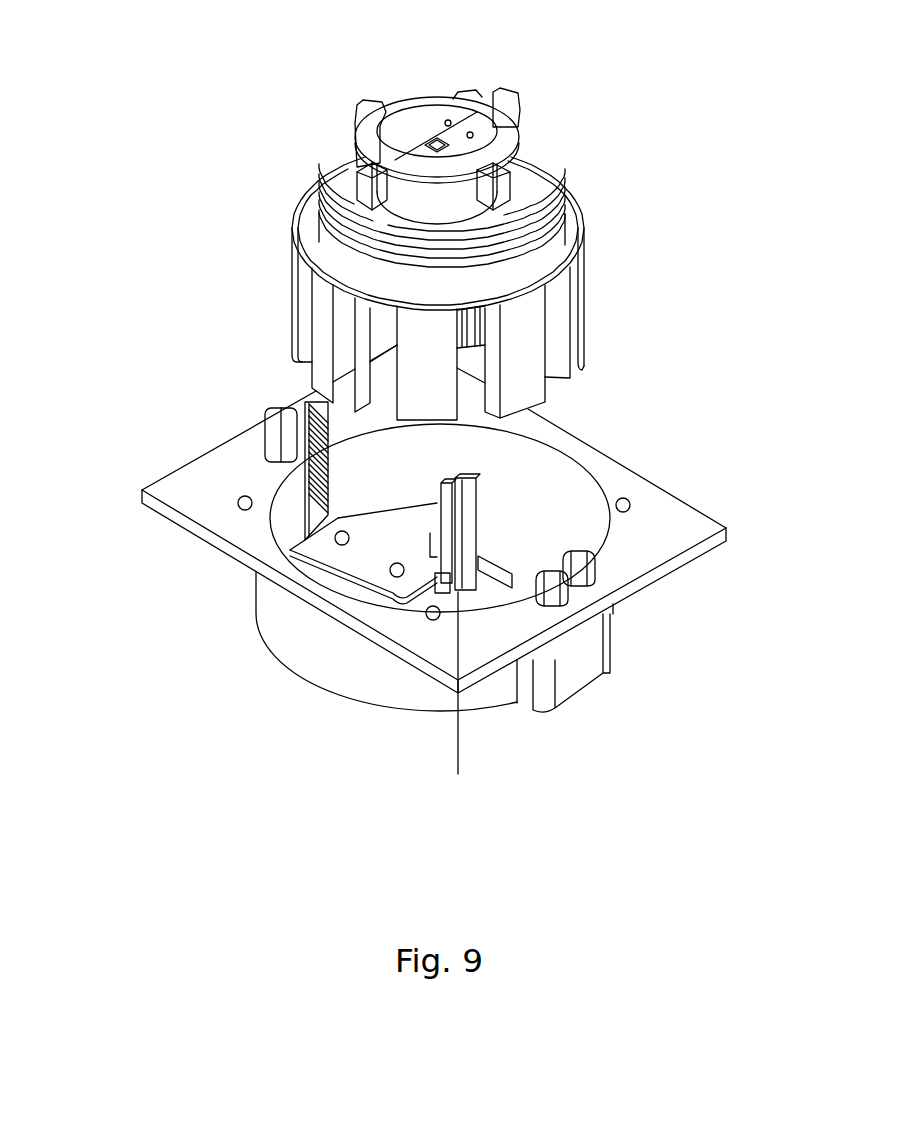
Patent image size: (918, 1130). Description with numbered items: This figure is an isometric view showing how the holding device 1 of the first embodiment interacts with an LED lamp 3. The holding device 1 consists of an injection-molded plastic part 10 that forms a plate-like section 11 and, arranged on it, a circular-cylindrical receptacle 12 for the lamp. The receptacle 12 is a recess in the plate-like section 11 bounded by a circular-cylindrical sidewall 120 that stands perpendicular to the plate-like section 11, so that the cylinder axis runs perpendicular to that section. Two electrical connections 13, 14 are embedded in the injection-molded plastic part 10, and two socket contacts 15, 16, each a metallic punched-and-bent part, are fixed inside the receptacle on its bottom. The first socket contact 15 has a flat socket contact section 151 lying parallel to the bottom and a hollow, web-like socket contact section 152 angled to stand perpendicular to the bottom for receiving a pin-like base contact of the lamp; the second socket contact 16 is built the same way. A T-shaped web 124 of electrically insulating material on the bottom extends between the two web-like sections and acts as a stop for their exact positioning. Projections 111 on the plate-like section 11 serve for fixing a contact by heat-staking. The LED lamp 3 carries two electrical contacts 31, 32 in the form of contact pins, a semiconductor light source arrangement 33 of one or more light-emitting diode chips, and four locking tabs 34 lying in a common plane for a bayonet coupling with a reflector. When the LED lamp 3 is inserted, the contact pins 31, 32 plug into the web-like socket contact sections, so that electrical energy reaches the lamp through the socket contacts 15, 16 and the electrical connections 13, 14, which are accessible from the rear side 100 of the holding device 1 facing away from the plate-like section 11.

The holding device 1 is at (188, 452).
The LED lamp 3 is at (310, 151).
The injection-molded plastic part 10 is at (244, 599).
The plate-like section 11 is at (675, 568).
The circular-cylindrical receptacle 12 is at (528, 480).
The first electrical connection 13 is at (280, 423).
The second electrical connection 14 is at (545, 588).
The first socket contact 15 is at (243, 611).
The flat socket contact section 151 is at (360, 565).
The hollow, web-like socket contact section 152 is at (450, 527).
The second socket contact 16 is at (464, 702).
The electrical contact 31 is at (482, 327).
The electrical contact 32 is at (471, 327).
The semiconductor light source arrangement 33 is at (437, 150).
The locking tabs 34 is at (372, 117).
The rear side 100 is at (575, 700).
The projections 111 is at (237, 503).
The circular-cylindrical sidewall 120 is at (345, 662).
The T-shaped web 124 is at (495, 568).